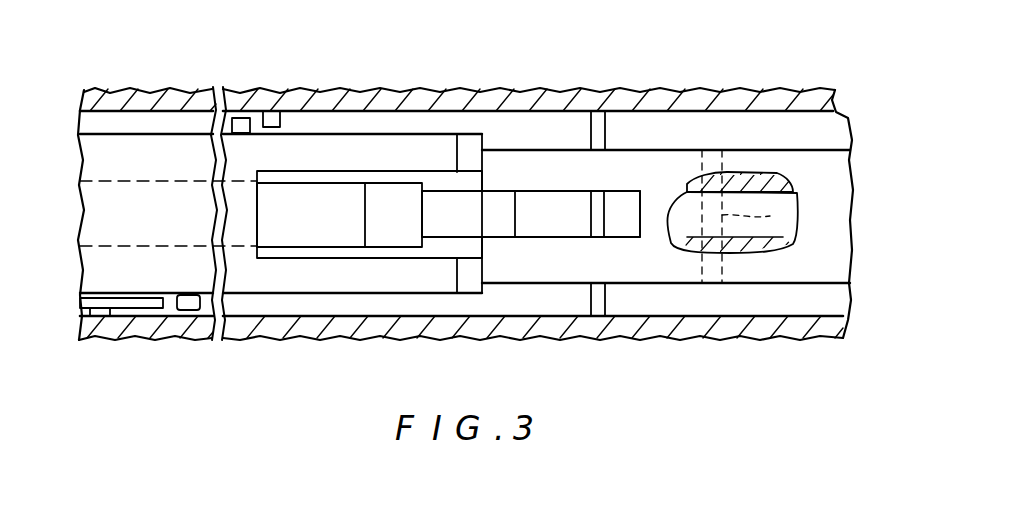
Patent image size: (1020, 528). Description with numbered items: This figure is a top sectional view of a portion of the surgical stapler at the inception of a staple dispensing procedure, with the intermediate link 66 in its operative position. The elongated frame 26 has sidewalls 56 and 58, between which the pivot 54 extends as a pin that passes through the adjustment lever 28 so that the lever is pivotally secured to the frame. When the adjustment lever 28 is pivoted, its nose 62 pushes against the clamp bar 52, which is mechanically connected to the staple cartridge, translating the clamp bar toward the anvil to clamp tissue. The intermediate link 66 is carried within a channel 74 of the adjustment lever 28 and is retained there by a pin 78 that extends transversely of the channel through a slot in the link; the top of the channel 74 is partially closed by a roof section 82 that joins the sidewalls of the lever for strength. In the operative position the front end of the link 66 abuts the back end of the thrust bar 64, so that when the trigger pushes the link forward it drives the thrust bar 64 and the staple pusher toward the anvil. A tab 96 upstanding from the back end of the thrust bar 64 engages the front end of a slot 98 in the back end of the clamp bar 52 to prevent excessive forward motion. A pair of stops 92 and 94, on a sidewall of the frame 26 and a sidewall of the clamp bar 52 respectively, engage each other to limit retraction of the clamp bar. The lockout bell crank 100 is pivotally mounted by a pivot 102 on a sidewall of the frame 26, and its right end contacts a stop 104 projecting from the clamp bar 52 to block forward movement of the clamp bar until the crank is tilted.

The frame 26 is at (342, 80).
The adjustment lever 28 is at (753, 288).
The clamp bar 52 is at (442, 135).
The pivot 54 is at (592, 130).
The sidewall 56 is at (320, 90).
The sidewall 58 is at (849, 332).
The nose 62 is at (512, 150).
The thrust bar 64 is at (332, 248).
The intermediate link 66 is at (556, 198).
The channel 74 is at (556, 198).
The pin 78 is at (800, 217).
The roof section 82 is at (640, 223).
The stop 92 is at (270, 115).
The stop 94 is at (242, 124).
The tab 96 is at (388, 170).
The slot 98 is at (270, 224).
The bell crank 100 is at (152, 308).
The pivot 102 is at (100, 313).
The stop 104 is at (192, 308).